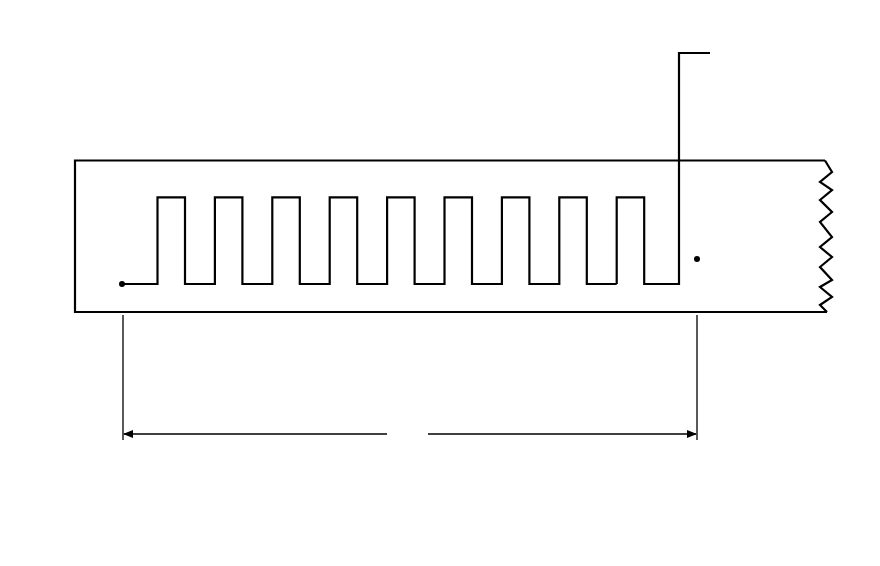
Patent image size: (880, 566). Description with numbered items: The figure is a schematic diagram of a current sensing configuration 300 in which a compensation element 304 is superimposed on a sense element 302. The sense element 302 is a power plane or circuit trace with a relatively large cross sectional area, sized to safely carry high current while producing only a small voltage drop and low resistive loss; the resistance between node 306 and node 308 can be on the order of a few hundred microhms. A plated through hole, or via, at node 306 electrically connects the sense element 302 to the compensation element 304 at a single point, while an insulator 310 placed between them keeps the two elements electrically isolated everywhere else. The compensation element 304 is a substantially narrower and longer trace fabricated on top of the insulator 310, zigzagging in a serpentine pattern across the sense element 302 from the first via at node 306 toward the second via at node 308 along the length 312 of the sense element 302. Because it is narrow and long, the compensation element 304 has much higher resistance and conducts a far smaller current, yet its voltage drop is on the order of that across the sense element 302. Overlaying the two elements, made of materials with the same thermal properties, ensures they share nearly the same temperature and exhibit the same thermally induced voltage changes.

The current sensing configuration 300 is at (145, 83).
The sense element 302 is at (102, 312).
The compensation element 304 is at (252, 285).
The node 306 is at (117, 278).
The node 308 is at (697, 259).
The insulator 310 is at (623, 297).
The length 312 is at (410, 379).